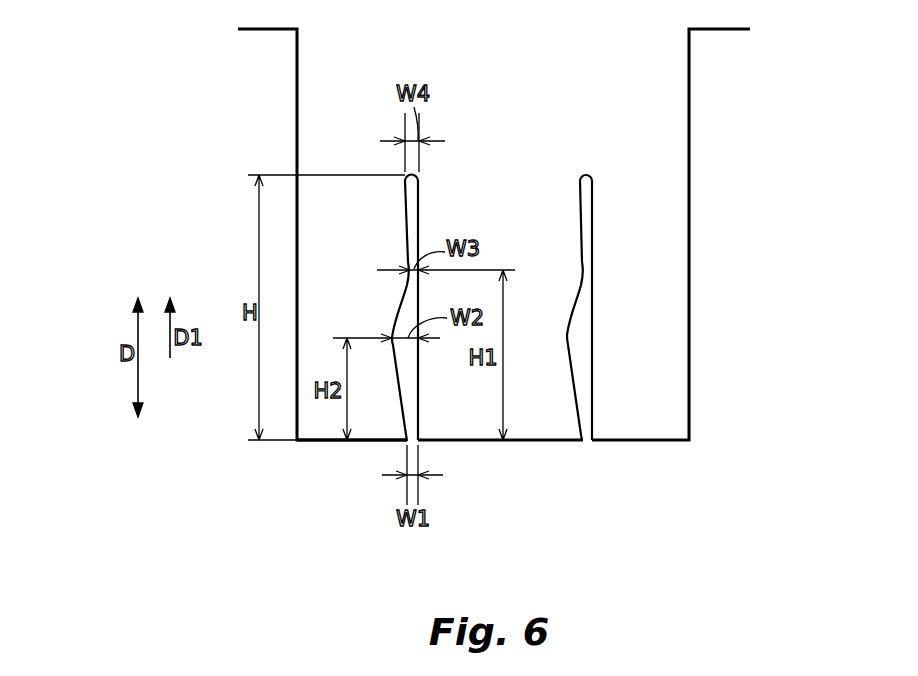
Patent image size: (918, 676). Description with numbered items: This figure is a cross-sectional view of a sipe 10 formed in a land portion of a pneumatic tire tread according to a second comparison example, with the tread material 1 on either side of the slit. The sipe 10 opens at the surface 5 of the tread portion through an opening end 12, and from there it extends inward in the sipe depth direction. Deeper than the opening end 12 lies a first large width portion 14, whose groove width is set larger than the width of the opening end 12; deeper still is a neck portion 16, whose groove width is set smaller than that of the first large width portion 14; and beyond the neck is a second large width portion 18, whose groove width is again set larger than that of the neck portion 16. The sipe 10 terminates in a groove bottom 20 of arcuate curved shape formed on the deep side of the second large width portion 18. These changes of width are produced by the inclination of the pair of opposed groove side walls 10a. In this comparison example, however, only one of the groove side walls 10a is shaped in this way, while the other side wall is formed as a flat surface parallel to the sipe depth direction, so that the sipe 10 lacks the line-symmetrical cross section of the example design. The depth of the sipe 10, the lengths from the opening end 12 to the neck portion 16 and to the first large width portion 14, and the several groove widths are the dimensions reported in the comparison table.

The housing wall 1 is at (672, 85).
The surface of tread portion 5 is at (647, 442).
The sipe 10 is at (399, 228).
The groove side wall 10a is at (398, 390).
The opening end 12 is at (410, 443).
The first large width portion 14 is at (395, 333).
The neck portion 16 is at (410, 263).
The second large width portion 18 is at (420, 196).
The groove bottom 20 is at (418, 178).